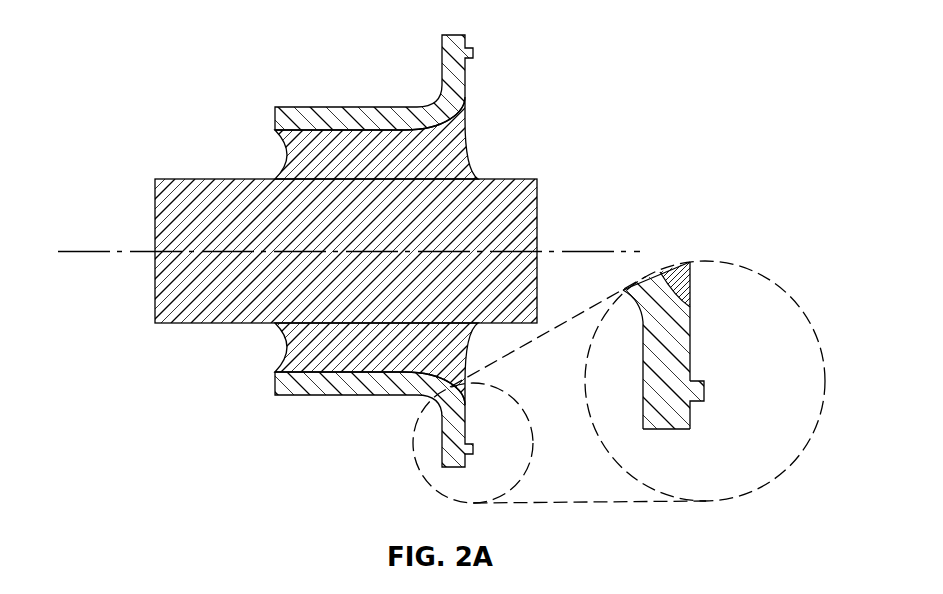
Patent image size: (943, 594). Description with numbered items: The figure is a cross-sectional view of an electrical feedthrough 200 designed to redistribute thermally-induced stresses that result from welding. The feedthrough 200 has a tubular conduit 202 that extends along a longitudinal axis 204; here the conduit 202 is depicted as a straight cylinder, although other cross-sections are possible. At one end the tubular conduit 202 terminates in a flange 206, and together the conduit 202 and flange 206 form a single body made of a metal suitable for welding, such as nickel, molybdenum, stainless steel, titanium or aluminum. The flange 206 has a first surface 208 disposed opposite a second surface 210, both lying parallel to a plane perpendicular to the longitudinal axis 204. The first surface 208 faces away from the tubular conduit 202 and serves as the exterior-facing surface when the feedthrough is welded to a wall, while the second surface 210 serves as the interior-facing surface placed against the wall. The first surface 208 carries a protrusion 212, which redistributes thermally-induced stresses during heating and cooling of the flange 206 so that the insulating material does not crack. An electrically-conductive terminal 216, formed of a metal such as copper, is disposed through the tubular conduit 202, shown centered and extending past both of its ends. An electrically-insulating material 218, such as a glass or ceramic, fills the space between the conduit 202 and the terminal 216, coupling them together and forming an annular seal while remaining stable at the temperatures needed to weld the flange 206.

The electrical feedthrough 200 is at (698, 95).
The tubular conduit 202 is at (355, 107).
The longitudinal axis 204 is at (73, 252).
The flange 206 is at (668, 430).
The first surface 208 is at (690, 362).
The second surface 210 is at (643, 357).
The protrusion 212 is at (704, 392).
The electrically-conductive terminal 216 is at (533, 180).
The electrically-insulating material 218 is at (465, 146).